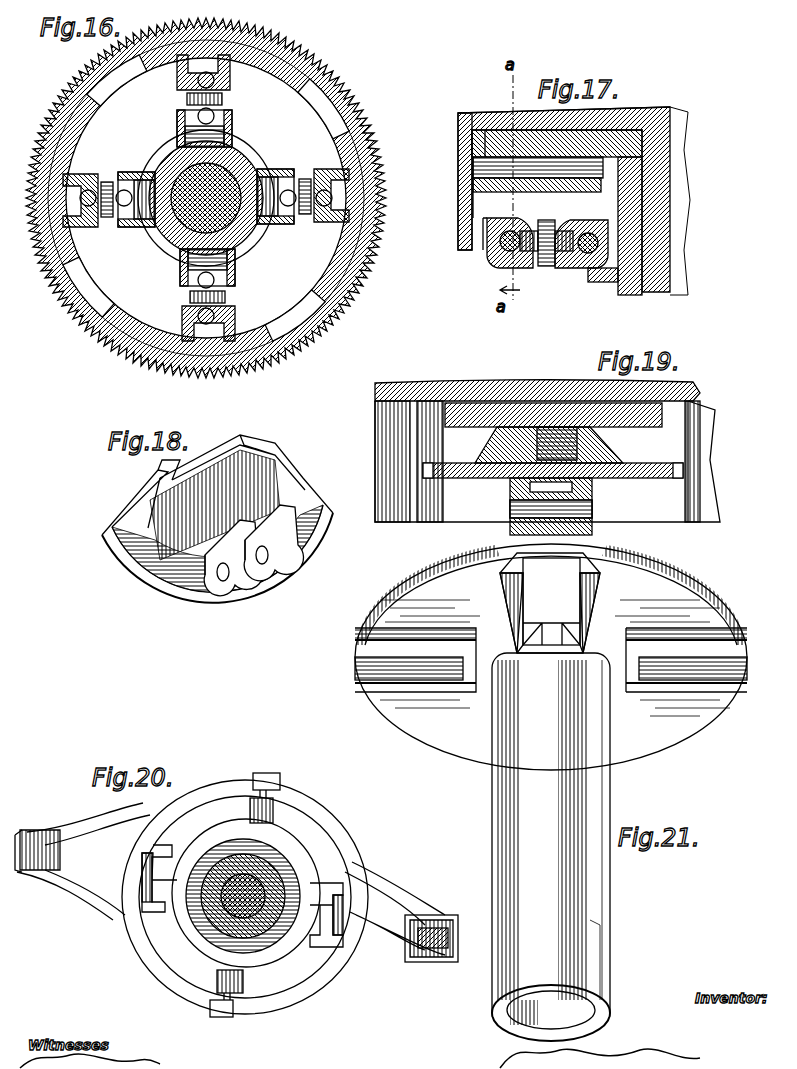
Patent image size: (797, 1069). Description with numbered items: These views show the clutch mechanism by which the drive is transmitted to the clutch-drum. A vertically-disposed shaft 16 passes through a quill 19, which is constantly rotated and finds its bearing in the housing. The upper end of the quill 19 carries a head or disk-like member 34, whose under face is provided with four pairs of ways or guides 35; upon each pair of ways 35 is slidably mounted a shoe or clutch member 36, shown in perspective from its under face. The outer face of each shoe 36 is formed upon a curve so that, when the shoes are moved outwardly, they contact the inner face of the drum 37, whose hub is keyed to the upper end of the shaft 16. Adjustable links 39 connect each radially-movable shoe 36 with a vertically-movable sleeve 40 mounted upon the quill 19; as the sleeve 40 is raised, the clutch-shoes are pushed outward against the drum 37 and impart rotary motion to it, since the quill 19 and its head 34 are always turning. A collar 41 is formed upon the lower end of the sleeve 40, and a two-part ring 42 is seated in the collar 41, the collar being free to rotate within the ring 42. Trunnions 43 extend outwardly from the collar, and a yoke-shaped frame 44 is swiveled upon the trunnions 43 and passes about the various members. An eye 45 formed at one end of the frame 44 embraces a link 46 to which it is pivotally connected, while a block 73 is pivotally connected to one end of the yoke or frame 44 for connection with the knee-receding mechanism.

In FIG. 16, the shaft 16 is at (240, 176).
In FIG. 20, the shaft 16 is at (210, 940).
In FIG. 16, the quill 19 is at (226, 163).
In FIG. 17, the quill 19 is at (650, 296).
In FIG. 21, the quill 19 is at (551, 847).
In FIG. 20, the quill 19 is at (282, 938).
In FIG. 17, the head or disk-like member 34 is at (640, 115).
In FIG. 19, the head or disk-like member 34 is at (648, 412).
In FIG. 21, the head or disk-like member 34 is at (551, 657).
In FIG. 17, the ways or guides 35 is at (538, 174).
In FIG. 19, the ways or guides 35 is at (549, 445).
In FIG. 21, the ways or guides 35 is at (503, 595).
In FIG. 16, the shoe or clutch member 36 is at (177, 72).
In FIG. 17, the shoe or clutch member 36 is at (483, 255).
In FIG. 18, the shoe or clutch member 36 is at (292, 555).
In FIG. 19, the shoe or clutch member 36 is at (500, 478).
In FIG. 16, the drum 37 is at (343, 286).
In FIG. 17, the drum 37 is at (460, 228).
In FIG. 19, the drum 37 is at (452, 388).
In FIG. 16, the adjustable links 39 is at (109, 218).
In FIG. 17, the adjustable links 39 is at (543, 266).
In FIG. 19, the adjustable links 39 is at (592, 500).
In FIG. 16, the vertically-movable sleeve 40 is at (168, 255).
In FIG. 17, the vertically-movable sleeve 40 is at (643, 246).
In FIG. 20, the vertically-movable sleeve 40 is at (220, 855).
In FIG. 16, the collar 41 is at (252, 254).
In FIG. 17, the collar 41 is at (604, 283).
In FIG. 20, the two-part ring 42 is at (305, 848).
In FIG. 20, the trunnions 43 is at (248, 812).
In FIG. 20, the yoke-shaped frame 44 is at (325, 975).
In FIG. 20, the eye 45 is at (430, 957).
In FIG. 20, the link 46 is at (432, 920).
In FIG. 20, the block 73 is at (32, 835).